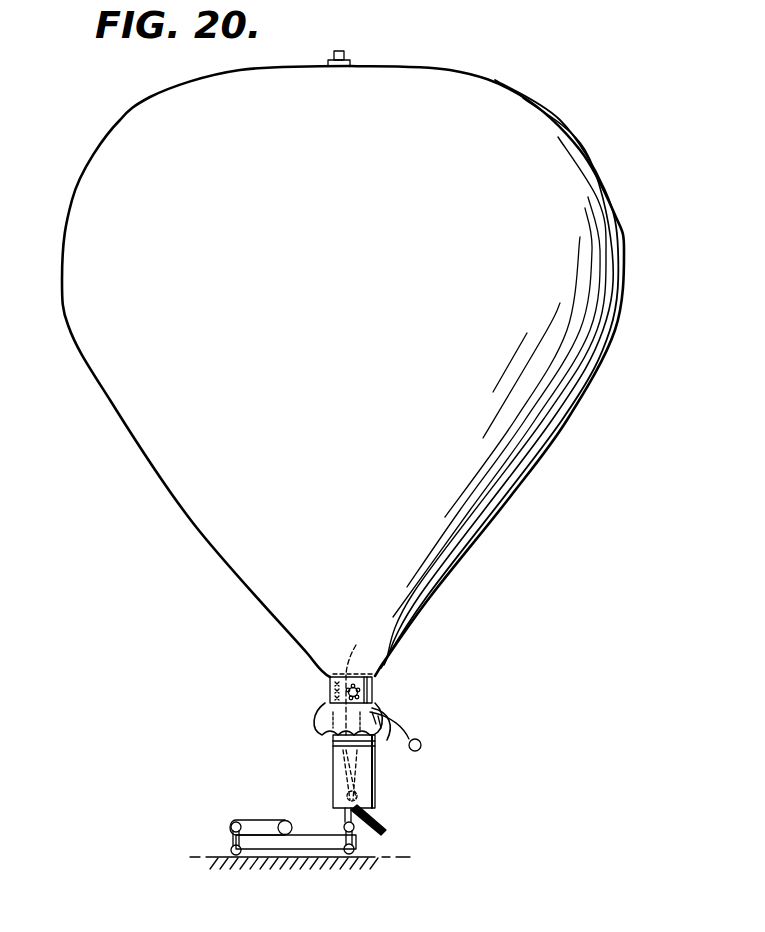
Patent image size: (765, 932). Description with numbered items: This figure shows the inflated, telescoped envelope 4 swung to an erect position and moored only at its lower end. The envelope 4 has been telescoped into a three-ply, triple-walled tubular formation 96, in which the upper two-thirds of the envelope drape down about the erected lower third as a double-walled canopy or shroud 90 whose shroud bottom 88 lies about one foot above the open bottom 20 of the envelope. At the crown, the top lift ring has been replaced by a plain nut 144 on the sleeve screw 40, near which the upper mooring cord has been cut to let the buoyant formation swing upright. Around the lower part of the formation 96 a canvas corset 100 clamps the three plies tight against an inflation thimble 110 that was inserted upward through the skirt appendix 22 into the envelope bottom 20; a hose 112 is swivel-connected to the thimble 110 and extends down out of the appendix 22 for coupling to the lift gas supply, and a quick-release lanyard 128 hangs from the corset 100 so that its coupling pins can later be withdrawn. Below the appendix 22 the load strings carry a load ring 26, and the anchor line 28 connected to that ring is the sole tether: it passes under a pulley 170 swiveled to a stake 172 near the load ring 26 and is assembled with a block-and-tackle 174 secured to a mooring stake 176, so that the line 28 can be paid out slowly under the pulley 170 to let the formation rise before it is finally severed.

The envelope 4 is at (122, 124).
The triple-walled tubular formation 96 is at (572, 118).
The plain nut 144 is at (330, 62).
The sleeve screw 40 is at (343, 52).
The inflation thimble 110 is at (356, 677).
The corset 100 is at (330, 686).
The double-walled canopy or shroud 90 is at (319, 724).
The open bottom 20 is at (335, 744).
The shroud bottom 88 is at (388, 736).
The quick-release cord or lanyard 128 is at (407, 728).
The skirt appendix 22 is at (376, 782).
The load ring 26 is at (338, 796).
The anchor line 28 is at (345, 814).
The hose 112 is at (382, 820).
The pulley 170 is at (344, 827).
The block-and-tackle 174 is at (260, 820).
The mooring stake 176 is at (232, 853).
The stake 172 is at (360, 857).